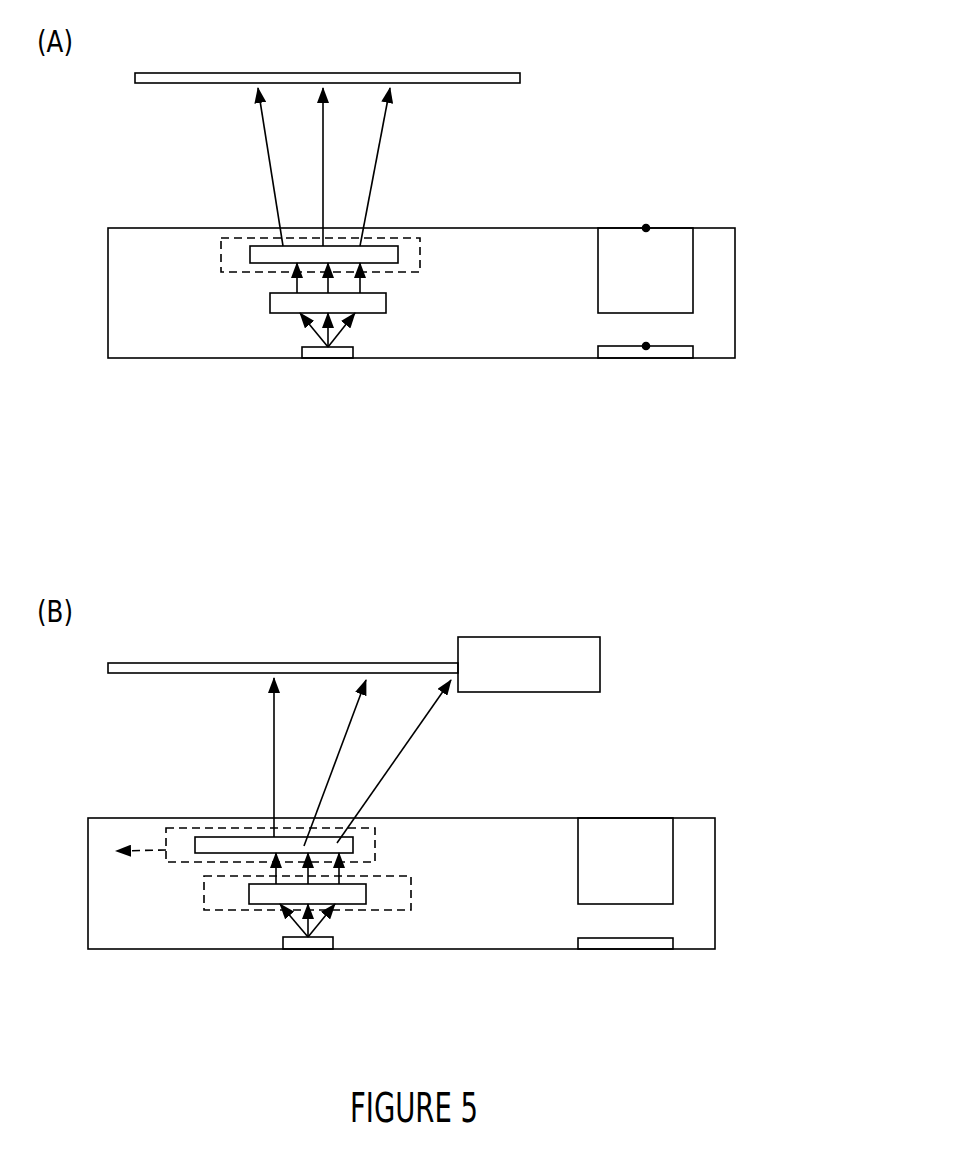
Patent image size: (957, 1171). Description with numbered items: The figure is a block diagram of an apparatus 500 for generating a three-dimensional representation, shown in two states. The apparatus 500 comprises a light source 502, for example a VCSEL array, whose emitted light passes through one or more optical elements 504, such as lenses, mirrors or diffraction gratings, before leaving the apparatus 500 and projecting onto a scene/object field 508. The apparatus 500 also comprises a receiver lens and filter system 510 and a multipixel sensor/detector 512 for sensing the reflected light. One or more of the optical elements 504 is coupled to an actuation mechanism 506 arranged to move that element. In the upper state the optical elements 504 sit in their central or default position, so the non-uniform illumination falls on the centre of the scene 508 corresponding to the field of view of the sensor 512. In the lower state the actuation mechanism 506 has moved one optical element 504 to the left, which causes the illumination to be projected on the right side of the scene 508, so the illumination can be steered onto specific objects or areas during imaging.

The apparatus 500 is at (510, 358).
The light source 502 is at (302, 348).
The optical elements 504 is at (270, 303).
The actuation mechanism 506 is at (420, 252).
The scene/object field 508 is at (443, 73).
The receiver lens and filter system 510 is at (646, 228).
The multipixel sensor/detector 512 is at (646, 346).